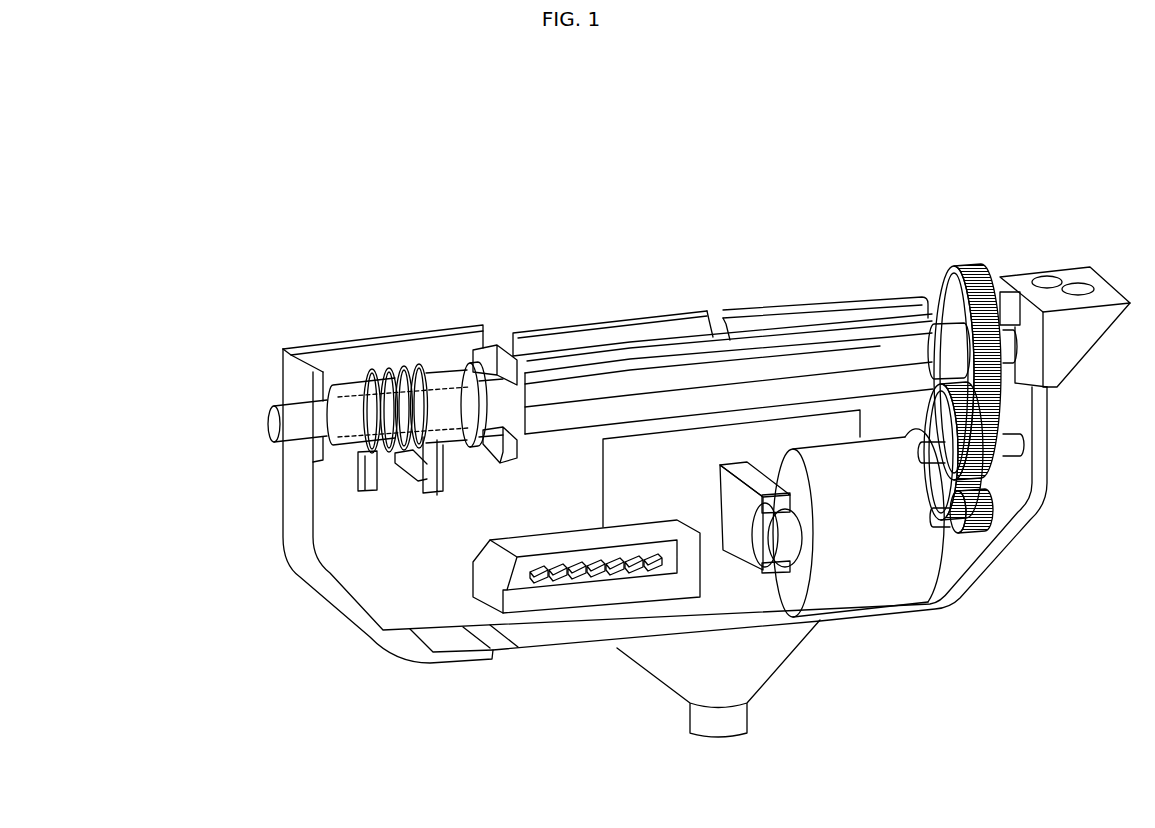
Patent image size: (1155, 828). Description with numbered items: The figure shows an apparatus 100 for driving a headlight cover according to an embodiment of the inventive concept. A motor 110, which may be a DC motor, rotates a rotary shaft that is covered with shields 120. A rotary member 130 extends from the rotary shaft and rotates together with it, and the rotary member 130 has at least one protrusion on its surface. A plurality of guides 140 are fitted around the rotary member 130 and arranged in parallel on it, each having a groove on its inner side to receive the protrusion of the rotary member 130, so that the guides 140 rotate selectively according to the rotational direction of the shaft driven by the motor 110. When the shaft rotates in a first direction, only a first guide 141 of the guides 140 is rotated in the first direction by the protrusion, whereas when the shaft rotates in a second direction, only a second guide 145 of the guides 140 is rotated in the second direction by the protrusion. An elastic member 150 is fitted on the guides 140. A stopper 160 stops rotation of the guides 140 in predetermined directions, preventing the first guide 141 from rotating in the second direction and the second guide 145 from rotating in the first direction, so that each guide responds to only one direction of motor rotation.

The apparatus for driving a headlight cover 100 is at (1055, 200).
The motor 110 is at (880, 588).
The shields 120 is at (785, 320).
The rotary member 130 is at (270, 417).
The guides 140 is at (363, 264).
The first guide 141 is at (350, 388).
The second guide 145 is at (445, 377).
The elastic member 150 is at (380, 455).
The stopper 160 is at (405, 473).